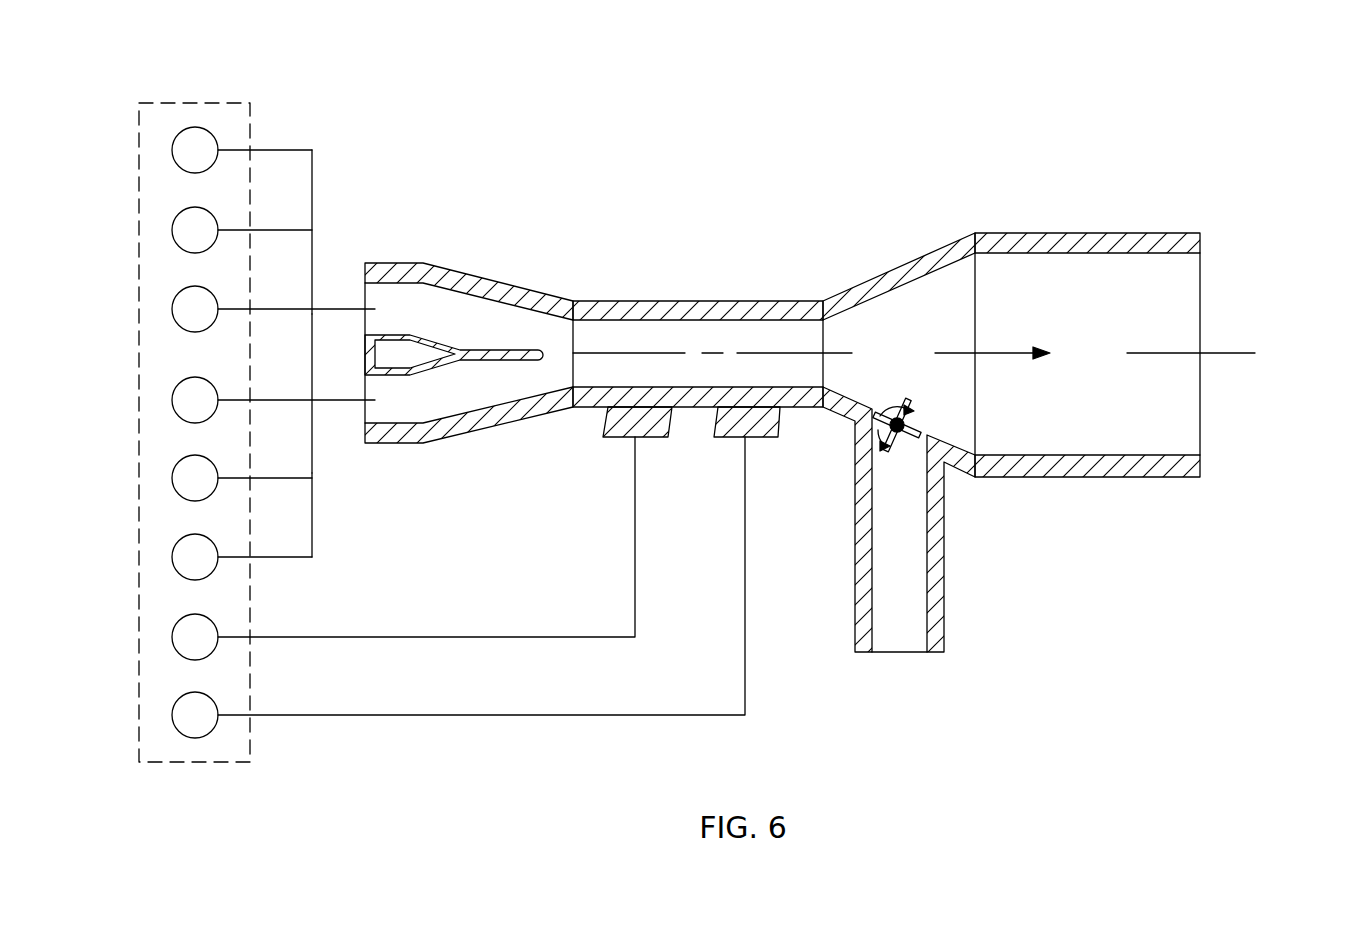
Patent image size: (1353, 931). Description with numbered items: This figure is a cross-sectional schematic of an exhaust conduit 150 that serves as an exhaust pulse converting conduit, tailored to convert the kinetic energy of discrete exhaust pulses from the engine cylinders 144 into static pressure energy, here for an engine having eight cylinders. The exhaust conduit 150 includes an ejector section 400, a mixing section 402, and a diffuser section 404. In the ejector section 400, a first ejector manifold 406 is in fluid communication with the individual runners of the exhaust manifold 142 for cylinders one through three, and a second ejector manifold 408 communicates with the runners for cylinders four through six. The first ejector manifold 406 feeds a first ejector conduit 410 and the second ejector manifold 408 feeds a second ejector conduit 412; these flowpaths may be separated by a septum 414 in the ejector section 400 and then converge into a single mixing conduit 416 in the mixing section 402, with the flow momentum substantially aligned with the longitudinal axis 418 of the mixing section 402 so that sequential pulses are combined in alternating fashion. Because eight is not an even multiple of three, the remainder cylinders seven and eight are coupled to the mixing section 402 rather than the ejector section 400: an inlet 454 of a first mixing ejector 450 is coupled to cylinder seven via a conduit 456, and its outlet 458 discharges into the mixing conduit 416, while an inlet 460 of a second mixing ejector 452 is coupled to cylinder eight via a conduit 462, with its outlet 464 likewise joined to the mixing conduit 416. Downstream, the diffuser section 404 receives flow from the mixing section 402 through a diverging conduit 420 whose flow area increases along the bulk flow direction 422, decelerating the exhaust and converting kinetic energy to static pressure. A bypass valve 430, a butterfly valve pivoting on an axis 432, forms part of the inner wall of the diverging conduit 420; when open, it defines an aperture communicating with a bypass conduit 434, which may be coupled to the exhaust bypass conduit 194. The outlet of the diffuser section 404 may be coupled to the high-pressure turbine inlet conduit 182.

The exhaust conduit 150 is at (676, 391).
The engine cylinders 144 is at (442, 398).
The exhaust manifold 142 is at (481, 382).
The first ejector manifold 406 is at (314, 193).
The second ejector manifold 408 is at (314, 516).
The ejector section 400 is at (443, 277).
The mixing section 402 is at (697, 296).
The diffuser section 404 is at (1065, 405).
The first ejector conduit 410 is at (445, 320).
The second ejector conduit 412 is at (478, 395).
The injector lance 414 is at (454, 299).
The mixing conduit 416 is at (605, 335).
The longitudinal axis 418 is at (710, 350).
The outlet of the first mixing ejector 458 is at (656, 380).
The outlet of the second mixing ejector 464 is at (762, 385).
The inlet of the first mixing ejector 454 is at (625, 440).
The conduit 456 is at (485, 635).
The inlet of the second mixing ejector 460 is at (735, 440).
The conduit 462 is at (688, 712).
The first mixing ejector 450 is at (588, 427).
The second mixing ejector 452 is at (793, 427).
The diverging conduit 420 is at (912, 293).
The bulk flow direction 422 is at (1010, 352).
The bypass valve 430 is at (903, 380).
The axis 432 is at (905, 424).
The bypass conduit 434 is at (908, 547).
The exhaust bypass conduit 194 is at (899, 617).
The high-pressure turbine inlet conduit 182 is at (1257, 338).